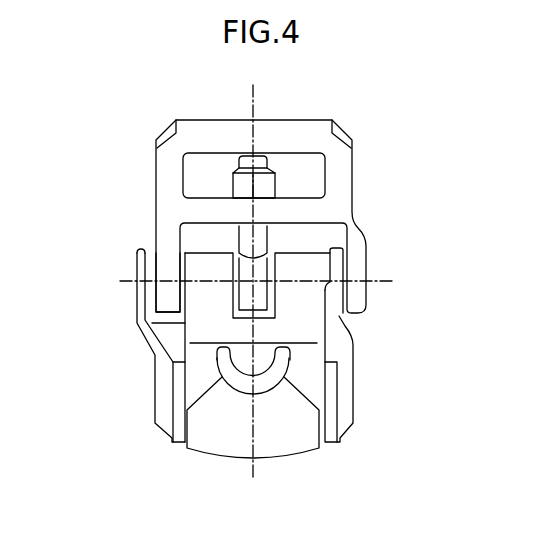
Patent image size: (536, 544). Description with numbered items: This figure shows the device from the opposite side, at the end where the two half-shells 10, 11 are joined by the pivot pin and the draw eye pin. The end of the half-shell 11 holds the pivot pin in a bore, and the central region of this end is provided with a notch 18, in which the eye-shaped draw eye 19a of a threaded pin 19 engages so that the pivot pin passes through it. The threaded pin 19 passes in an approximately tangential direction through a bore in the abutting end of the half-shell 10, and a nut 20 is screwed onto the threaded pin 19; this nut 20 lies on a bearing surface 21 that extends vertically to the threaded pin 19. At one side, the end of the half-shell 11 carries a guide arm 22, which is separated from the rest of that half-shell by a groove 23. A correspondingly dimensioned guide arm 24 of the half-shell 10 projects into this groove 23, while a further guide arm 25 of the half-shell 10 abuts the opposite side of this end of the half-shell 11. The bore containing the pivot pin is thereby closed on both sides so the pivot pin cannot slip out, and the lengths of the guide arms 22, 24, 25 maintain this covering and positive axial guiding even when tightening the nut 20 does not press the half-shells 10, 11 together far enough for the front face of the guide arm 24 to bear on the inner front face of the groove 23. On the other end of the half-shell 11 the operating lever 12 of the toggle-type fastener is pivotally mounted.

The half-shell 10 is at (303, 167).
The half-shell 11 is at (308, 375).
The operating lever 12 is at (287, 433).
The notch 18 is at (262, 308).
The threaded pin 19 is at (247, 163).
The draw eye 19a is at (262, 272).
The nut 20 is at (267, 188).
The bearing surface 21 is at (320, 188).
The guide arm 22 is at (147, 318).
The groove 23 is at (165, 317).
The guide arm 24 is at (170, 293).
The guide arm 25 is at (353, 300).